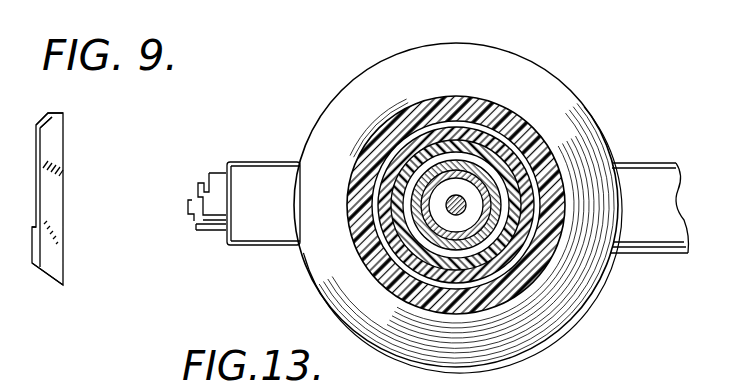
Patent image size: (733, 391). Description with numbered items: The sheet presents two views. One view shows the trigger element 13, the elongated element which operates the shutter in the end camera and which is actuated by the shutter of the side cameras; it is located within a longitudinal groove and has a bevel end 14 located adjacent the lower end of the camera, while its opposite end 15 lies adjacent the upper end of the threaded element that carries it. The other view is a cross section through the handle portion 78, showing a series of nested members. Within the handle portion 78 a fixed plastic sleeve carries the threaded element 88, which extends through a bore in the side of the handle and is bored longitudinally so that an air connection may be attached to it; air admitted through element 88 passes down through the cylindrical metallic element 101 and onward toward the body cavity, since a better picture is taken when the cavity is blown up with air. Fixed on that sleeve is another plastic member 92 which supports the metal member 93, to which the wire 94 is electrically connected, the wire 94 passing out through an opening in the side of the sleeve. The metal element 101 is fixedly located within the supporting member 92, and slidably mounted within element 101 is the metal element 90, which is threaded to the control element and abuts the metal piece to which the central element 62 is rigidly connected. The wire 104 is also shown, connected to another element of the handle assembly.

In FIG. 9, the trigger element 13 is at (53, 197).
In FIG. 9, the bevel end 14 is at (48, 278).
In FIG. 9, the opposite end 15 is at (50, 125).
In FIG. 13, the element 62 is at (466, 205).
In FIG. 13, the handle portion 78 is at (537, 133).
In FIG. 13, the element 88 is at (652, 172).
In FIG. 13, the metal element 90 is at (428, 124).
In FIG. 13, the plastic member 92 is at (510, 257).
In FIG. 13, the metal member 93 is at (479, 128).
In FIG. 13, the wire 94 is at (213, 163).
In FIG. 13, the cylindrical metallic element 101 is at (386, 165).
In FIG. 13, the wire 104 is at (193, 216).